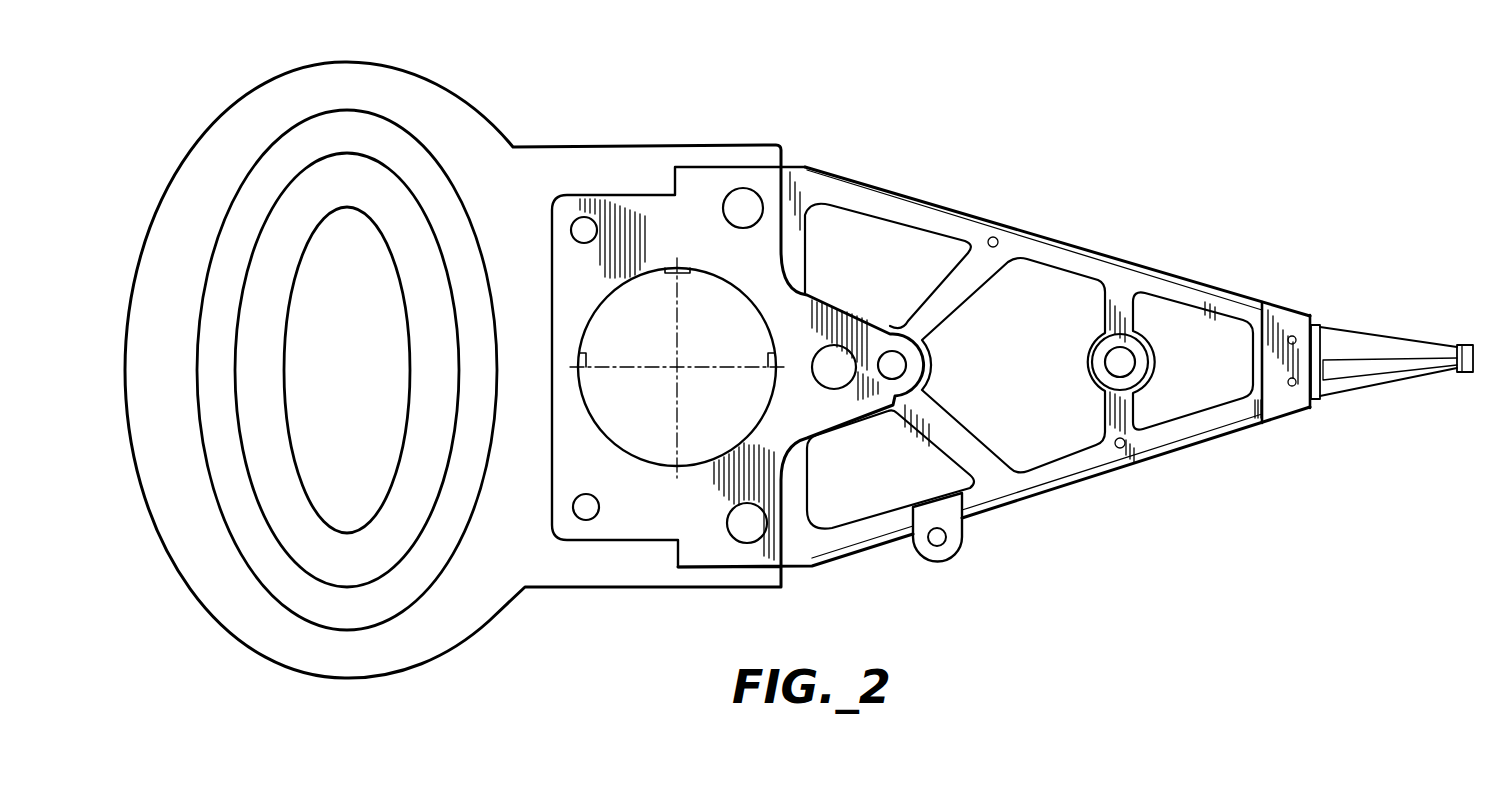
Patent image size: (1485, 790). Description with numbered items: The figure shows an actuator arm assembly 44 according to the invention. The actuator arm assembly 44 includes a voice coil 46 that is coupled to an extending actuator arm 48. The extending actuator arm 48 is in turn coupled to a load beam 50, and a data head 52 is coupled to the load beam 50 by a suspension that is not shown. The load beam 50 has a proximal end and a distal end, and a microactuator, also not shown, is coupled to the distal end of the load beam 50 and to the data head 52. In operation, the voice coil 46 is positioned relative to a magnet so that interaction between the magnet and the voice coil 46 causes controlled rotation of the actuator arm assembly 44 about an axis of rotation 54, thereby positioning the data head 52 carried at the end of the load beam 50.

The actuator arm assembly 44 is at (657, 120).
The voice coil 46 is at (245, 97).
The extending actuator arm 48 is at (1028, 236).
The load beam 50 is at (1373, 350).
The data head 52 is at (1468, 375).
The axis of rotation 54 is at (678, 367).